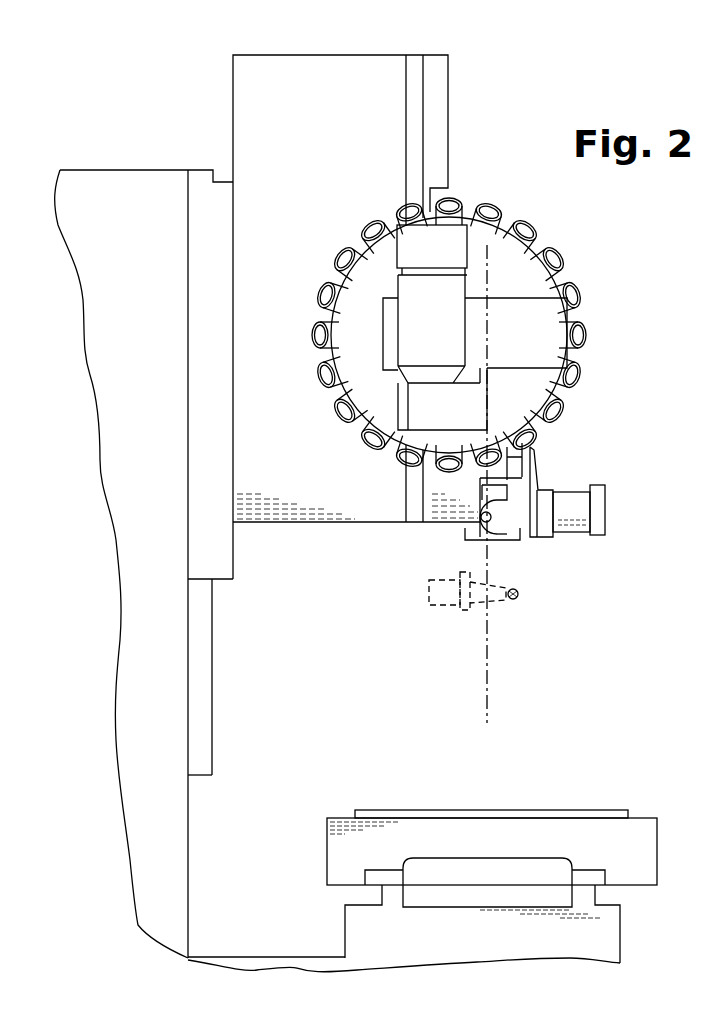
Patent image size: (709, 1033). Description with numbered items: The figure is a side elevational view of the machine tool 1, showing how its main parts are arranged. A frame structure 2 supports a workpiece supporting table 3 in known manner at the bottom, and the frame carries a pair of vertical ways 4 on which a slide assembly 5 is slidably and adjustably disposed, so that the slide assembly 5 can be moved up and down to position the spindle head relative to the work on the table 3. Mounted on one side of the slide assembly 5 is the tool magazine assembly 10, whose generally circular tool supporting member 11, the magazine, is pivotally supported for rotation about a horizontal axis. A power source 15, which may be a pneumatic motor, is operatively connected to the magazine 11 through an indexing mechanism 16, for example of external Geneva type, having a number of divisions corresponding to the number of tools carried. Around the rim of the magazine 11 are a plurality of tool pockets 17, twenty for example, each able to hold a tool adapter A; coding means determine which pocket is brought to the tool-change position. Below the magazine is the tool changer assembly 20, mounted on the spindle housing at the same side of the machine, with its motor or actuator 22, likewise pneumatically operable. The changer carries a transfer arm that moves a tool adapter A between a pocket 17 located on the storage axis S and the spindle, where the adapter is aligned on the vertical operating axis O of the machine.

The machine tool 1 is at (183, 541).
The frame structure 2 is at (126, 753).
The workpiece supporting table 3 is at (537, 810).
The vertical ways 4 is at (212, 720).
The slide assembly 5 is at (300, 500).
The tool magazine assembly 10 is at (482, 316).
The tool supporting member 11 is at (535, 249).
The power source 15 is at (408, 342).
The indexing mechanism 16 is at (422, 416).
The tool pockets 17 is at (568, 252).
The tool changer assembly 20 is at (550, 485).
The actuator 22 is at (596, 498).
The operating axis O is at (488, 288).
The tool adapter A is at (470, 611).
The storage axis S is at (490, 620).